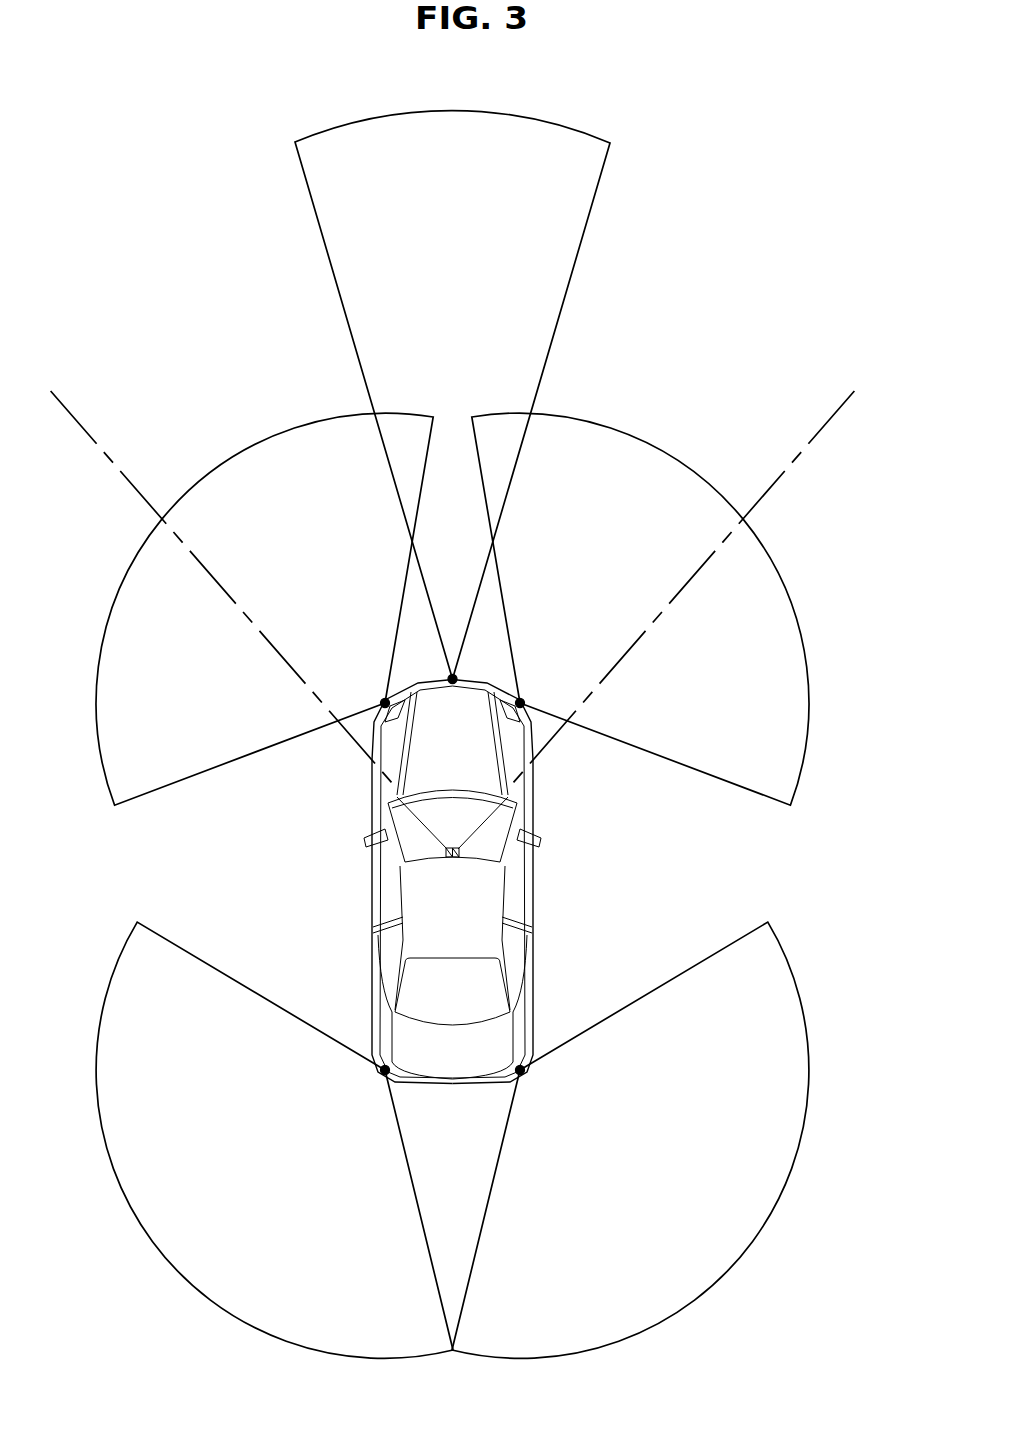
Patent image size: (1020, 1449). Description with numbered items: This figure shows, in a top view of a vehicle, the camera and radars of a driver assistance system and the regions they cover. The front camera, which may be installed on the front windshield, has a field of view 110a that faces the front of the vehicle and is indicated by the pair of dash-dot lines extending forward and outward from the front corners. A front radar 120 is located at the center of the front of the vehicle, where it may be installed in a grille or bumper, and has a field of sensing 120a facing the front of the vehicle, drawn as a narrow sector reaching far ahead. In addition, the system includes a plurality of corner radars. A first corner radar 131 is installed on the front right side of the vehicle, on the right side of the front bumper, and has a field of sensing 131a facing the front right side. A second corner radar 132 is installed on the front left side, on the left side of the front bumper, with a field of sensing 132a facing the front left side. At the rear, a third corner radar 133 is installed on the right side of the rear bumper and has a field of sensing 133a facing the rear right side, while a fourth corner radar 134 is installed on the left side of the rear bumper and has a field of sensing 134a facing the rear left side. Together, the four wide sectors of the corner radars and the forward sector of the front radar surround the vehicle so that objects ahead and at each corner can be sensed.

The field of view 110a is at (812, 442).
The front radar 120 is at (452, 679).
The field of sensing 120a is at (548, 263).
The first corner radar 131 is at (520, 703).
The field of sensing 131a is at (668, 472).
The second corner radar 132 is at (385, 703).
The field of sensing 132a is at (237, 472).
The third corner radar 133 is at (520, 1070).
The field of sensing 133a is at (755, 1225).
The fourth corner radar 134 is at (385, 1070).
The field of sensing 134a is at (150, 1225).